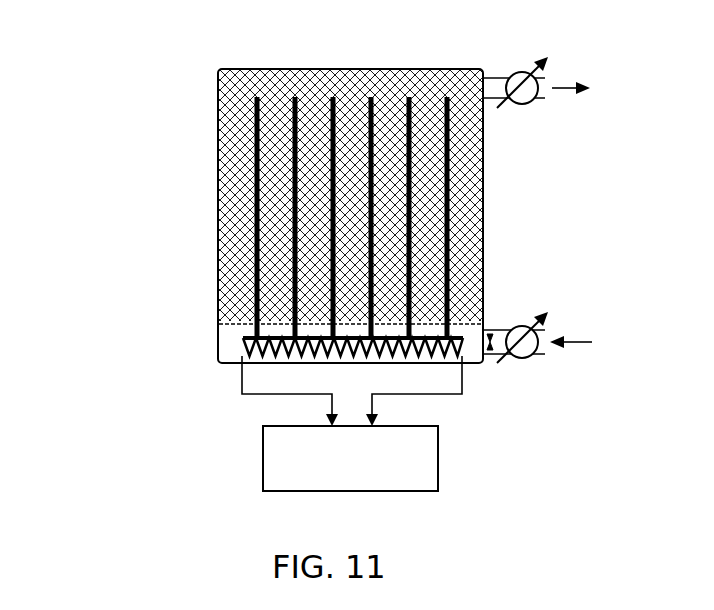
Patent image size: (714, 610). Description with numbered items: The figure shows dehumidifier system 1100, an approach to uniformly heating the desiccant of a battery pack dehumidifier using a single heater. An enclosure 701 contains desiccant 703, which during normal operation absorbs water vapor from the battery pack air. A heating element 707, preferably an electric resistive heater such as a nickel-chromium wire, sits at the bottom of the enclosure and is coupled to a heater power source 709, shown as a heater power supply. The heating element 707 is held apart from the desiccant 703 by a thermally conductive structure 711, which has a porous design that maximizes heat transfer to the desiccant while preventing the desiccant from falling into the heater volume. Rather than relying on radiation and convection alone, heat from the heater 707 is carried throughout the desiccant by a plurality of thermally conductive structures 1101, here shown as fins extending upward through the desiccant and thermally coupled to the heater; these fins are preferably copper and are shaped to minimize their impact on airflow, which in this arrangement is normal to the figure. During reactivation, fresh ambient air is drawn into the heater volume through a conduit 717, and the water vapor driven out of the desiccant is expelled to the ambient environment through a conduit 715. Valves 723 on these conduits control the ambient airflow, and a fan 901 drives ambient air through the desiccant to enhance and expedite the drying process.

The dehumidifier system 1100 is at (152, 222).
The enclosure 701 is at (315, 69).
The desiccant 703 is at (405, 74).
The heating element 707 is at (335, 365).
The heater power source 709 is at (438, 473).
The thermally conductive structure 711 is at (463, 322).
The conduit 715 is at (490, 77).
The conduit 717 is at (488, 328).
The valve 723 is at (522, 104).
The fan 901 is at (490, 358).
The thermally conductive structures 1101 is at (335, 148).